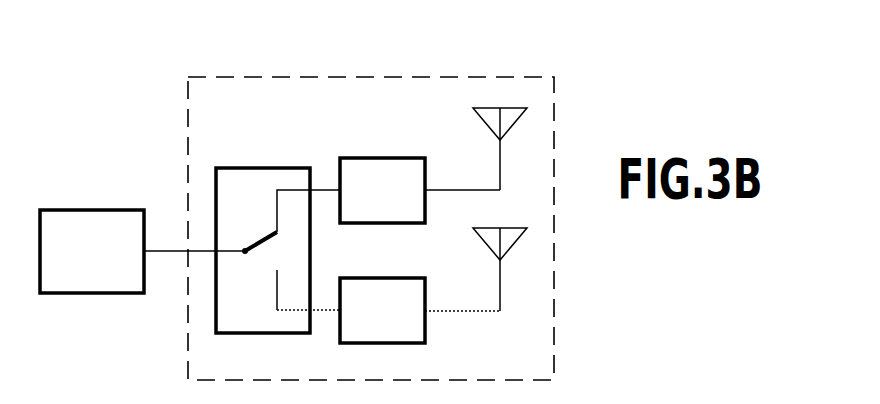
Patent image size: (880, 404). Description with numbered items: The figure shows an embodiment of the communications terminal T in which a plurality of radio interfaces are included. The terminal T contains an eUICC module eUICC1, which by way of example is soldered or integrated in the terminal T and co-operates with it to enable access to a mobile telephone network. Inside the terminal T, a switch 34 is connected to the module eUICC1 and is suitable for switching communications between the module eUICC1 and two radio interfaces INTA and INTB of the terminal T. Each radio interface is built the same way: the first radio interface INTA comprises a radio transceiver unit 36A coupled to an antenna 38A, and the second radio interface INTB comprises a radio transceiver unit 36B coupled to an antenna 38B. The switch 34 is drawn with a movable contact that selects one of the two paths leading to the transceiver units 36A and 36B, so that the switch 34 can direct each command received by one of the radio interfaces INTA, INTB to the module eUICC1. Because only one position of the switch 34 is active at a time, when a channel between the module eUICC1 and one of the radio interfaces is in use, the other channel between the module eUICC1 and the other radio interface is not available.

The communications terminal T is at (413, 76).
The eUICC module eUICC1 is at (48, 265).
The switch 34 is at (253, 167).
The radio transceiver unit 36A is at (408, 203).
The radio transceiver unit 36B is at (408, 323).
The antenna 38A is at (477, 188).
The antenna 38B is at (478, 309).
The radio interface INTA is at (437, 150).
The radio interface INTB is at (441, 322).